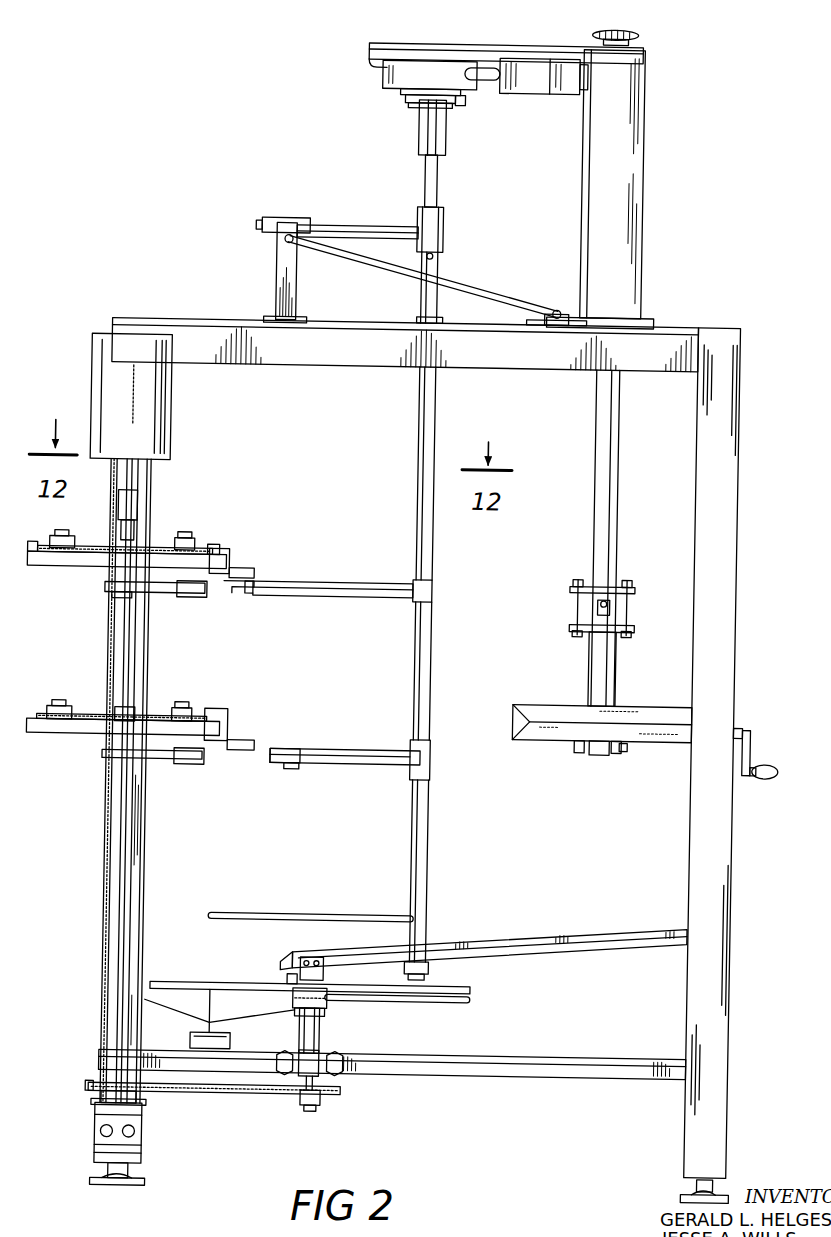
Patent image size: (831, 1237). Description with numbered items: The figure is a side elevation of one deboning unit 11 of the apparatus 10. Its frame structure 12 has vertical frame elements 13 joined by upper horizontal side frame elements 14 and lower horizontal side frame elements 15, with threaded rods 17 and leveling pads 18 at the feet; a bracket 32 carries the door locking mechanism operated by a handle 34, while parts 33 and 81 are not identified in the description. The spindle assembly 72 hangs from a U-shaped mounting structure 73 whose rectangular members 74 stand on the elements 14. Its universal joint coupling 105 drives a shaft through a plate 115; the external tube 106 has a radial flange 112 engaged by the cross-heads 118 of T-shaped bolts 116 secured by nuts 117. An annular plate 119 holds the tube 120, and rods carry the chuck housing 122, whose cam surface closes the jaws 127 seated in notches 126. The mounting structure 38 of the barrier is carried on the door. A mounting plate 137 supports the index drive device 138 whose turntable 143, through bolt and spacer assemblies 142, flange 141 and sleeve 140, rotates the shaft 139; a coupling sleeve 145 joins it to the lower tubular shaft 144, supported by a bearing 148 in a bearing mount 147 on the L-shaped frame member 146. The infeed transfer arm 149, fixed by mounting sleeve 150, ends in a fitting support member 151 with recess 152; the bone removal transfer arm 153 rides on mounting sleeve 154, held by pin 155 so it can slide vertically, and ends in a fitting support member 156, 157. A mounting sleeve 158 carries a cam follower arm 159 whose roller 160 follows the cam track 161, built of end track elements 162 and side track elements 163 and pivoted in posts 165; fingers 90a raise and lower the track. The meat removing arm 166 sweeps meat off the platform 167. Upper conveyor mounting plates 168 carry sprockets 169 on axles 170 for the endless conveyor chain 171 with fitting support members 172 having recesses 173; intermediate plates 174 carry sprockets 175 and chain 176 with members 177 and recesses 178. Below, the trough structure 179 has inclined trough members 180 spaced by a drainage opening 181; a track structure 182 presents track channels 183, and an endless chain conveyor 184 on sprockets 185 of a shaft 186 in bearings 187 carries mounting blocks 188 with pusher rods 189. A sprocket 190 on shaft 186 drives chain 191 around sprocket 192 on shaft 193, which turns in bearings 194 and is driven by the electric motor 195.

The apparatus 10 is at (138, 105).
The deboning unit 11 is at (732, 234).
The frame structure 12 is at (740, 399).
The vertical frame element 13 is at (736, 472).
The upper horizontal side frame element 14 is at (171, 322).
The lower horizontal side frame element 15 is at (627, 1071).
The threaded rod 17 is at (113, 1170).
The leveling pad 18 is at (143, 1187).
The bracket 32 is at (740, 722).
The crank arm 33 is at (753, 734).
The handle 34 is at (781, 764).
The mounting structure 38 is at (580, 718).
The spindle assembly 72 is at (602, 598).
The U-shaped mounting structure 73 is at (689, 57).
The rectangular member 74 is at (632, 213).
The knob 81 is at (628, 32).
The finger 90a is at (553, 326).
The universal joint coupling 105 is at (606, 599).
The external tube 106 is at (614, 467).
The radial flange 112 is at (631, 584).
The plate 115 is at (574, 622).
The T-shaped bolt 116 is at (573, 597).
The nut 117 is at (577, 632).
The cross-head 118 is at (576, 579).
The annular plate 119 is at (611, 647).
The elongate tube 120 is at (590, 687).
The chuck housing 122 is at (624, 741).
The radial notch 126 is at (596, 752).
The jaw 127 is at (581, 742).
The mounting plate 137 is at (399, 43).
The index drive device 138 is at (374, 71).
The elongate shaft 139 is at (431, 176).
The sleeve 140 is at (415, 135).
The annular flange 141 is at (444, 96).
The bolt and spacer assembly 142 is at (395, 100).
The rotary turntable 143 is at (389, 92).
The lower tubular shaft 144 is at (432, 810).
The tubular coupling member 145 is at (414, 655).
The L-shaped support frame member 146 is at (649, 941).
The bearing mount 147 is at (424, 945).
The rod-shaped bearing 148 is at (423, 895).
The infeed transfer arm 149 is at (381, 751).
The mounting sleeve 150 is at (431, 760).
The fitting support member 151 is at (301, 752).
The U-shaped recess 152 is at (301, 767).
The bone removal transfer arm 153 is at (376, 583).
The mounting sleeve 154 is at (413, 400).
The pin 155 is at (432, 252).
The fitting support member 156 is at (256, 593).
The fitting support member 157 is at (238, 598).
The mounting sleeve 158 is at (432, 218).
The cam follower arm 159 is at (347, 229).
The cam follower 160 is at (282, 220).
The cam track 161 is at (503, 288).
The end track element 162 is at (284, 246).
The side track element 163 is at (383, 284).
The post 165 is at (267, 263).
The meat removing arm 166 is at (324, 952).
The platform 167 is at (582, 917).
The upper conveyor mounting plate 168 is at (38, 572).
The sprocket 169 is at (42, 552).
The axle 170 is at (60, 544).
The endless conveyor chain 171 is at (156, 576).
The fitting support member 172 is at (232, 558).
The recess 173 is at (243, 571).
The intermediate conveyor mounting plate 174 is at (46, 742).
The sprocket 175 is at (55, 718).
The endless conveyor chain 176 is at (179, 707).
The fitting support member 177 is at (236, 743).
The recess 178 is at (226, 748).
The trough shaped structure 179 is at (184, 929).
The inclined trough member 180 is at (147, 835).
The elongate opening 181 is at (216, 1037).
The track structure 182 is at (286, 942).
The track channel 183 is at (300, 967).
The endless chain conveyor 184 is at (354, 946).
The sprocket 185 is at (328, 1017).
The shaft 186 is at (327, 1090).
The bearing 187 is at (317, 977).
The mounting block 188 is at (290, 977).
The pusher rod 189 is at (175, 989).
The sprocket 190 is at (337, 1099).
The endless drive chain 191 is at (172, 1089).
The sprocket 192 is at (92, 1091).
The vertically oriented shaft 193 is at (108, 885).
The bearing 194 is at (145, 550).
The electric motor 195 is at (86, 384).